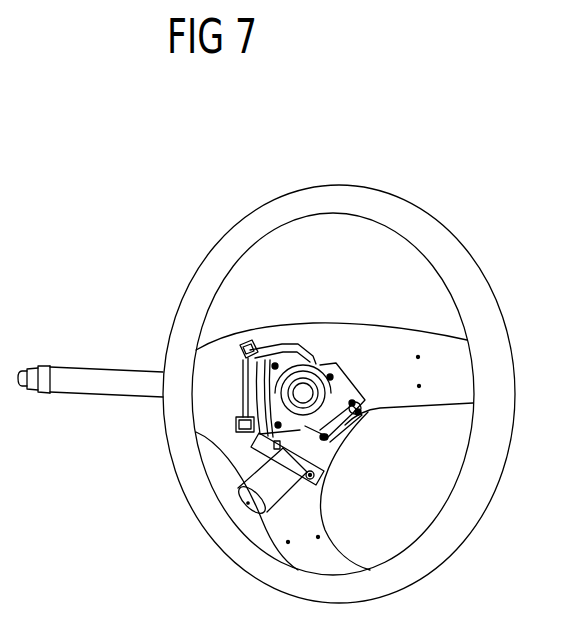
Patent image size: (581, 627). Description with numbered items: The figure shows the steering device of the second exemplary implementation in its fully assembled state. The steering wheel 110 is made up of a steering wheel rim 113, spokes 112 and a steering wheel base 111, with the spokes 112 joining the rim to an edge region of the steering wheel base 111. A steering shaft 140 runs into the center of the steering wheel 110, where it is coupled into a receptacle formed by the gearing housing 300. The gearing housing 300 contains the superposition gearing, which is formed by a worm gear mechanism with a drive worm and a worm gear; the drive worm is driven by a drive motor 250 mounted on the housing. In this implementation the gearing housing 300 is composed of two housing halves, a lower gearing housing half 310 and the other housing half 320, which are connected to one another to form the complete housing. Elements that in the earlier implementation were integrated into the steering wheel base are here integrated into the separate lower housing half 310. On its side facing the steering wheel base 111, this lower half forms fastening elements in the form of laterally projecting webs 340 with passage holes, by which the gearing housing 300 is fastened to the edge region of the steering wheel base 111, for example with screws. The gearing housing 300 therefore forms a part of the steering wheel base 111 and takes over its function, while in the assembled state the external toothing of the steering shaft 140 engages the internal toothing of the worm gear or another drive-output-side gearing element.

The steering wheel 110 is at (339, 359).
The steering wheel base 111 is at (340, 428).
The spokes 112 is at (428, 352).
The steering wheel rim 113 is at (452, 252).
The steering shaft 140 is at (98, 396).
The drive motor 250 is at (274, 487).
The gearing housing 300 is at (326, 357).
The lower gearing housing half 310 is at (265, 348).
The housing half 320 is at (316, 360).
The laterally projecting webs 340 is at (247, 358).